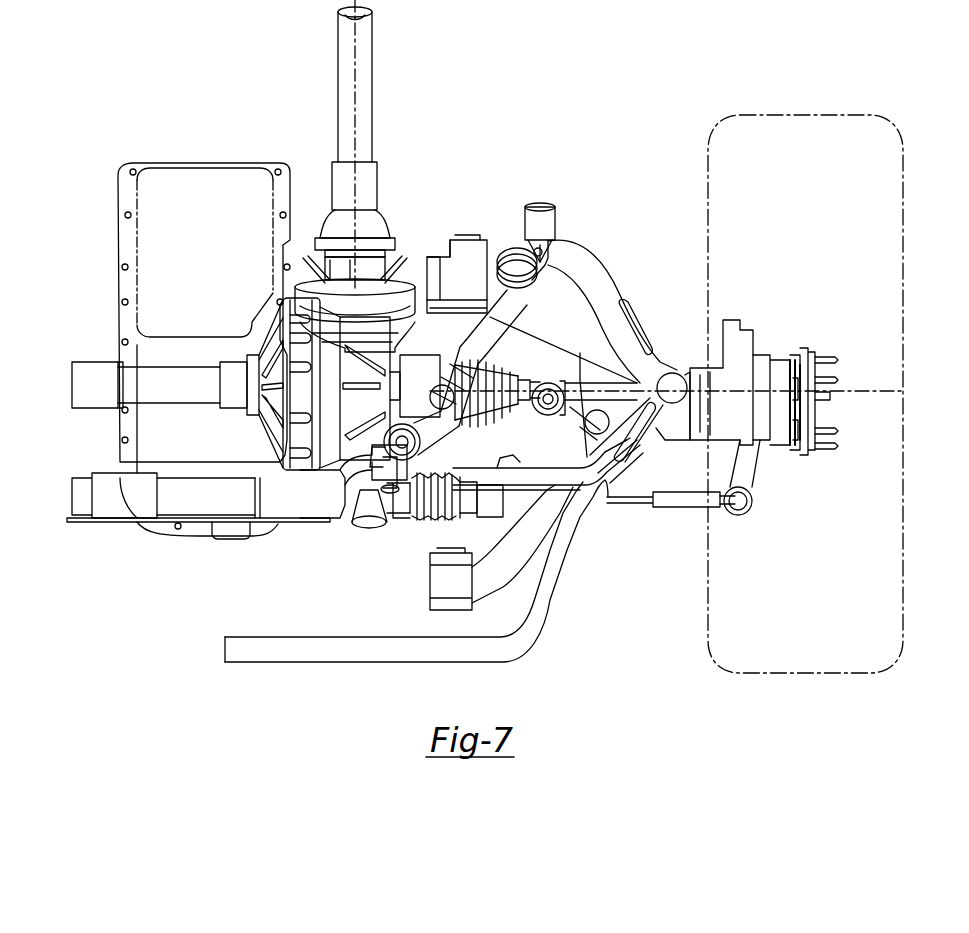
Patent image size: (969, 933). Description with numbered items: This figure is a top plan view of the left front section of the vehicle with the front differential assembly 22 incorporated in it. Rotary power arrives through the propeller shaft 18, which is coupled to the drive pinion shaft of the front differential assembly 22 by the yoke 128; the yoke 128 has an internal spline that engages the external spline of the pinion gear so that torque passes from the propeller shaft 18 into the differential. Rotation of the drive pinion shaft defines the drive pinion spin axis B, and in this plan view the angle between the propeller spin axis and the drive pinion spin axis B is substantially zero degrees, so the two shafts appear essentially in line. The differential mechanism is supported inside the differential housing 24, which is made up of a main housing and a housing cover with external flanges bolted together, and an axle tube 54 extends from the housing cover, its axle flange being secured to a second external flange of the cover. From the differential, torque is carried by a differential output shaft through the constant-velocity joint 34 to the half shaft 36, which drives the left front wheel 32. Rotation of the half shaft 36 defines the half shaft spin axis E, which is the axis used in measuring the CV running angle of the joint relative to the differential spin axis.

The propeller shaft 18 is at (338, 62).
The yoke 128 is at (394, 245).
The drive pinion spin axis B is at (308, 282).
The axle tube 54 is at (95, 362).
The front differential assembly 22 is at (278, 461).
The differential housing 24 is at (316, 470).
The constant-velocity joint 34 is at (437, 325).
The half shaft 36 is at (580, 352).
The left front wheel 32 is at (805, 673).
The half shaft spin axis E is at (522, 385).